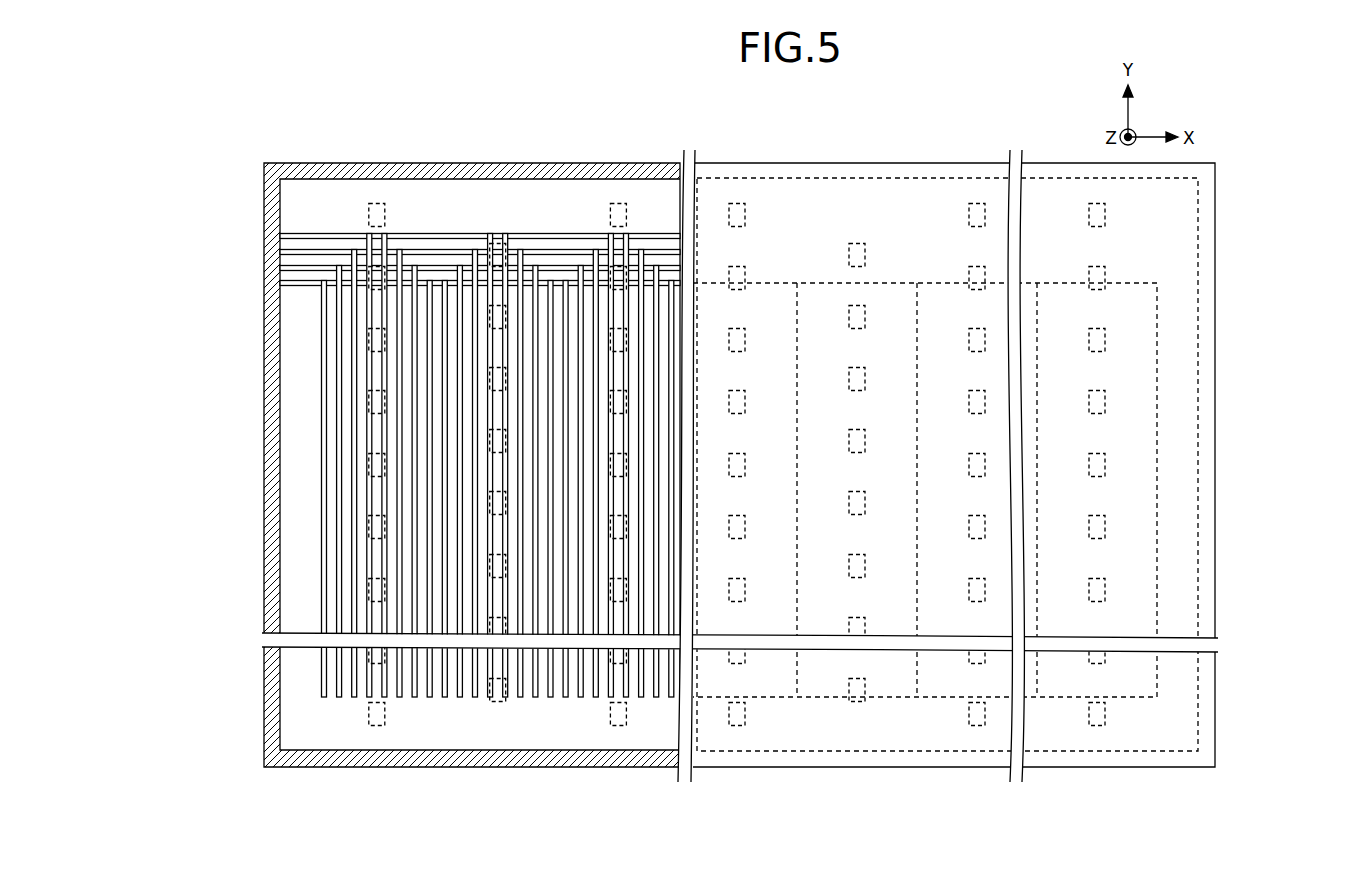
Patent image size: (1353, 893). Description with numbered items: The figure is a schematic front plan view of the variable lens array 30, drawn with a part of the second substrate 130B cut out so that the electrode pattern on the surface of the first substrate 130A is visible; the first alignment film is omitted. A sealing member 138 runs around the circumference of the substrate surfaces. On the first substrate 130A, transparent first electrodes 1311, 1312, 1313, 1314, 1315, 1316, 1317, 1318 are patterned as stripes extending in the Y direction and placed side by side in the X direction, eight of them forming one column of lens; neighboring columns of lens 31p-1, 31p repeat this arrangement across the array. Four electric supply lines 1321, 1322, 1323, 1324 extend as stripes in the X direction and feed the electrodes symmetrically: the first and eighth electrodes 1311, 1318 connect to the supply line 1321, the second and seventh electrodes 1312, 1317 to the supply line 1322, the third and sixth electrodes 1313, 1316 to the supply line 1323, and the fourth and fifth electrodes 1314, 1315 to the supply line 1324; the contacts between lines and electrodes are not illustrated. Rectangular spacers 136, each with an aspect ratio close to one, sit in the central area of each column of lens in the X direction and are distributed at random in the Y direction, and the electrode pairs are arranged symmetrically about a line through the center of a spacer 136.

The sealing member 138 is at (296, 163).
The spacer 136 is at (377, 203).
The variable lens array 30 is at (685, 149).
The column of lens 31p-1 is at (775, 280).
The column of lens 31p is at (1071, 278).
The first substrate 130A is at (296, 398).
The second substrate 130B is at (1187, 405).
The electric supply line 1321 is at (283, 284).
The electric supply line 1322 is at (283, 268).
The electric supply line 1323 is at (283, 252).
The electric supply line 1324 is at (283, 236).
The first electrode 1311 is at (588, 790).
The first electrode 1312 is at (338, 682).
The first electrode 1313 is at (354, 690).
The first electrode 1314 is at (369, 695).
The first electrode 1315 is at (384, 697).
The first electrode 1316 is at (399, 697).
The first electrode 1317 is at (414, 697).
The first electrode 1318 is at (430, 697).